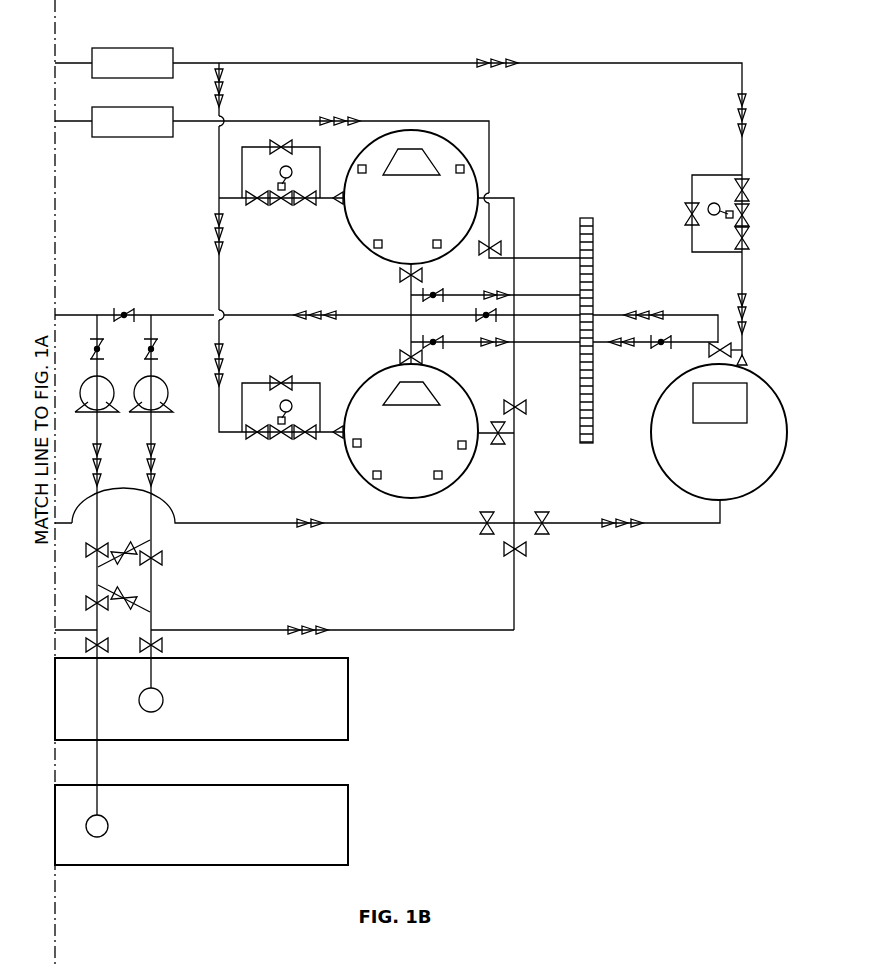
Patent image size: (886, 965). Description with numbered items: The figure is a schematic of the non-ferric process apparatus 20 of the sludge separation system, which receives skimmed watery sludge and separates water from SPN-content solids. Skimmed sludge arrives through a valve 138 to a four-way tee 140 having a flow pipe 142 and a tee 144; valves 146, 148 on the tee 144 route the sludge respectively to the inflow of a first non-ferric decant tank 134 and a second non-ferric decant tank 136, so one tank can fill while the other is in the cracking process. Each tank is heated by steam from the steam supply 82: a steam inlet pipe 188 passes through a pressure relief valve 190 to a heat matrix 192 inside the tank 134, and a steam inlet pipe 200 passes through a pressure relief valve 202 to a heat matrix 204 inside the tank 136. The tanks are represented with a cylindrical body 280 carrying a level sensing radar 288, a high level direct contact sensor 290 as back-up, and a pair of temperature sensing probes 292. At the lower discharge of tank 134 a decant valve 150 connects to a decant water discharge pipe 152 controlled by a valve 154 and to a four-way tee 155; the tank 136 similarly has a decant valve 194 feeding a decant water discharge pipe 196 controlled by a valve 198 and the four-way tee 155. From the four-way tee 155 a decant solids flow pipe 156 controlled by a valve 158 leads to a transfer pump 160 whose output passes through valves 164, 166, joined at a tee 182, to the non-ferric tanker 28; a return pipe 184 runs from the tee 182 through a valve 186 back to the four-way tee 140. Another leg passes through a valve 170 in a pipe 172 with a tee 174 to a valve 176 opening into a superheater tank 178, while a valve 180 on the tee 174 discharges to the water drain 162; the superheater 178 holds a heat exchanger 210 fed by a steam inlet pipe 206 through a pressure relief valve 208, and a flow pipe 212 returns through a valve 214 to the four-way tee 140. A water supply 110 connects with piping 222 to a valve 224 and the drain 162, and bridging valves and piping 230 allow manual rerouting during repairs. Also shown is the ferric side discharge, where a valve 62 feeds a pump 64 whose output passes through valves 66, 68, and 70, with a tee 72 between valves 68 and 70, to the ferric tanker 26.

The non-ferric process apparatus 20 is at (543, 165).
The ferric tanker 26 is at (348, 818).
The non-ferric tanker 28 is at (348, 703).
The valve 62 is at (93, 338).
The pump 64 is at (84, 388).
The valve 66 is at (87, 550).
The valve 68 is at (95, 593).
The valve 70 is at (86, 645).
The tee 72 is at (95, 630).
The steam supply 82 is at (125, 48).
The water supply 110 is at (120, 137).
The first non-ferric decant tank 134 is at (310, 478).
The second non-ferric decant tank 136 is at (303, 249).
The valve 138 is at (478, 527).
The 4-tee 140 is at (500, 513).
The flow pipe 142 is at (514, 468).
The tee 144 is at (512, 433).
The valve 146 is at (498, 447).
The valve 148 is at (522, 400).
The decant valve 150 is at (398, 357).
The decant water discharge pipe 152 is at (537, 296).
The valve 154 is at (436, 348).
The 4-tee 155 is at (410, 312).
The decant solids flow pipe 156 is at (238, 312).
The valve 158 is at (168, 333).
The transfer pump 160 is at (168, 388).
The water drain 162 is at (594, 238).
The valve 164 is at (163, 558).
The valve 166 is at (163, 645).
The valve 170 is at (504, 250).
The pipe 172 is at (605, 313).
The tee 174 is at (722, 322).
The valve 176 is at (732, 348).
The superheater tank 178 is at (762, 372).
The valve 180 is at (658, 353).
The tee 182 is at (157, 627).
The return pipe 184 is at (418, 628).
The valve 186 is at (522, 560).
The steam inlet pipe 188 is at (219, 212).
The pressure relief valve 190 is at (277, 447).
The heat matrix 192 is at (415, 400).
The decant valve 194 is at (400, 275).
The decant water discharge pipe 196 is at (518, 292).
The valve 198 is at (437, 288).
The steam inlet pipe 200 is at (330, 203).
The pressure relief valve 202 is at (275, 208).
The heat matrix 204 is at (418, 176).
The steam inlet pipe 206 is at (742, 270).
The pressure relief valve 208 is at (745, 192).
The heat exchanger 210 is at (748, 407).
The flow pipe 212 is at (672, 523).
The valve 214 is at (550, 528).
The piping 222 is at (457, 121).
The valve 224 is at (514, 262).
The bridging valves and piping 230 is at (126, 310).
The cylindrical body 280 is at (436, 242).
The level sensing radar 288 is at (377, 240).
The high level direct contact sensor 290 is at (432, 480).
The temperature sensing probes 292 is at (363, 165).